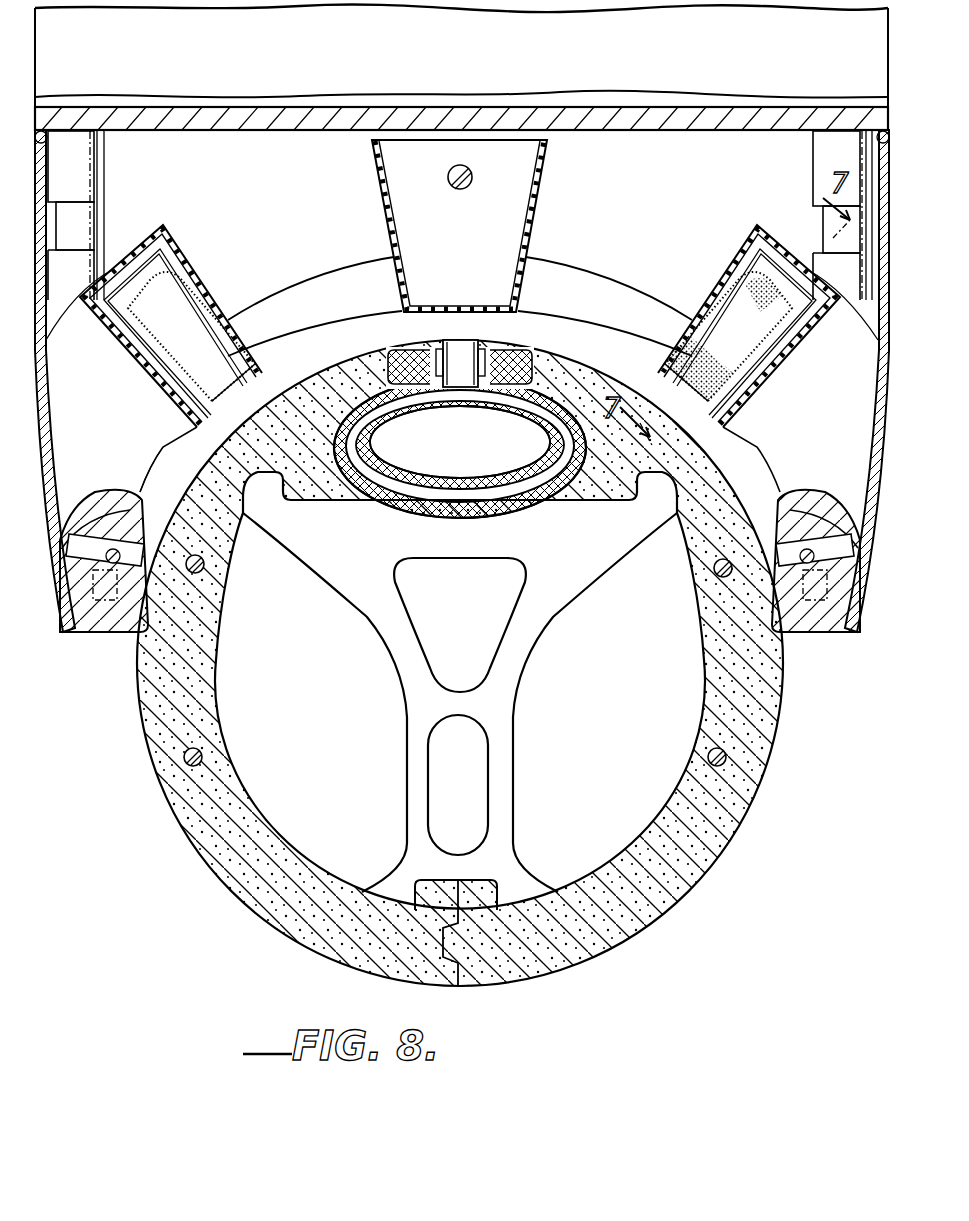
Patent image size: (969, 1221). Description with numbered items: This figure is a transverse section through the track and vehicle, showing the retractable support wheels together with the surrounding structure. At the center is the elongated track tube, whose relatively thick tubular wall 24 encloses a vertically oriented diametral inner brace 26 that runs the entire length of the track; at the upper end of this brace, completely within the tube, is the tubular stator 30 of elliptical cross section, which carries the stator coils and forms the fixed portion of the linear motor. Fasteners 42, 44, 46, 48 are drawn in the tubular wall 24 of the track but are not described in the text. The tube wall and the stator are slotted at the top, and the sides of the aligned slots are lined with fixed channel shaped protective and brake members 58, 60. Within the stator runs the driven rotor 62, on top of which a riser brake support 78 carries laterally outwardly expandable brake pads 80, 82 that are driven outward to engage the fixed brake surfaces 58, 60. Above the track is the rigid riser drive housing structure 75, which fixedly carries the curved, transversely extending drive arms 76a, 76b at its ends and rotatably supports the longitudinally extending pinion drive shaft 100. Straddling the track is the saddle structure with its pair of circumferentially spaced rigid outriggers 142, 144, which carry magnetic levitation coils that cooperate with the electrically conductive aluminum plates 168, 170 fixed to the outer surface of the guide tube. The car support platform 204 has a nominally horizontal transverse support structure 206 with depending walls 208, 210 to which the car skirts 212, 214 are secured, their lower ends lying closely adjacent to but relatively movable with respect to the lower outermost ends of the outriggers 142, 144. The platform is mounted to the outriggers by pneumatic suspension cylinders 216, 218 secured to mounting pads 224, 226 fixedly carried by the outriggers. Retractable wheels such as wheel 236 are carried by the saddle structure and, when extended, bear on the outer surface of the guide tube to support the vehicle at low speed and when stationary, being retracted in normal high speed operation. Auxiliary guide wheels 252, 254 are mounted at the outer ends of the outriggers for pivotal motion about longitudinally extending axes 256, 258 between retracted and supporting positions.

The tubular wall 24 is at (477, 663).
The diametral inner brace 26 is at (508, 740).
The tubular stator 30 is at (460, 458).
The bolt 42 is at (712, 568).
The bolt 44 is at (728, 757).
The bolt 46 is at (204, 757).
The bolt 48 is at (206, 565).
The protective and brake member 58 is at (404, 353).
The protective and brake member 60 is at (528, 356).
The rotor 62 is at (455, 480).
The riser drive housing structure 75 is at (487, 226).
The drive arm 76a is at (290, 276).
The drive arm 76b is at (605, 276).
The riser brake support 78 is at (460, 388).
The brake pad 80 is at (440, 349).
The brake pad 82 is at (485, 350).
The pinion drive shaft 100 is at (473, 176).
The outrigger 142 is at (171, 346).
The outrigger 144 is at (749, 347).
The aluminum plate 168 is at (196, 591).
The aluminum plate 170 is at (185, 515).
The car support platform 204 is at (380, 92).
The transverse support structure 206 is at (250, 107).
The depending wall 208 is at (50, 107).
The depending wall 210 is at (880, 105).
The car skirt 212 is at (47, 432).
The car skirt 214 is at (880, 411).
The pneumatic suspension cylinder 216 is at (106, 160).
The pneumatic suspension cylinder 218 is at (812, 152).
The mounting pad 224 is at (105, 250).
The mounting pad 226 is at (820, 250).
The wheel 236 is at (252, 420).
The auxiliary guide wheel 252 is at (150, 592).
The auxiliary guide wheel 254 is at (757, 561).
The longitudinally extending axis 256 is at (170, 561).
The longitudinally extending axis 258 is at (790, 596).